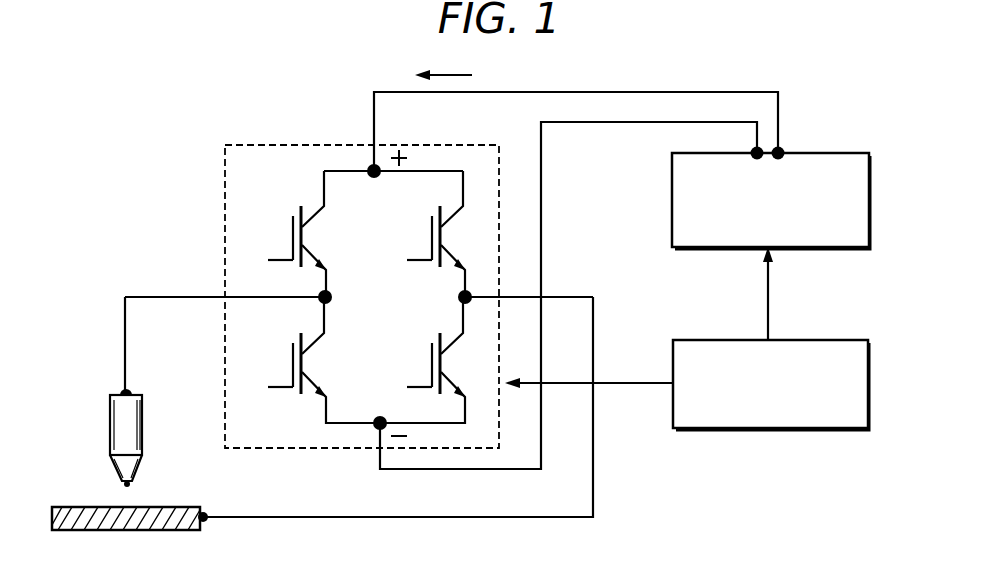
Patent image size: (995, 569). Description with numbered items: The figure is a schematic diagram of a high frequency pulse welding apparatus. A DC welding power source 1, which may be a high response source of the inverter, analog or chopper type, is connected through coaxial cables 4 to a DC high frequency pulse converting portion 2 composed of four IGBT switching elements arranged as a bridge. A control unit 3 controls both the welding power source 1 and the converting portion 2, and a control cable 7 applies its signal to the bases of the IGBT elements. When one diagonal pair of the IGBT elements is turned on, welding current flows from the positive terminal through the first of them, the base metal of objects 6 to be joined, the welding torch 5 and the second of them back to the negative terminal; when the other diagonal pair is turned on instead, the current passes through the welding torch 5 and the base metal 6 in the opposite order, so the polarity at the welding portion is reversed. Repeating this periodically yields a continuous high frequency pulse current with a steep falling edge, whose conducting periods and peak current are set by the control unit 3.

The DC welding power source 1 is at (860, 152).
The DC high frequency pulse converting portion 2 is at (262, 145).
The control unit 3 is at (858, 340).
The coaxial cables 4 is at (627, 92).
The welding torch 5 is at (108, 422).
The base metal of objects to be joined 6 is at (70, 506).
The control cable 7 is at (650, 383).